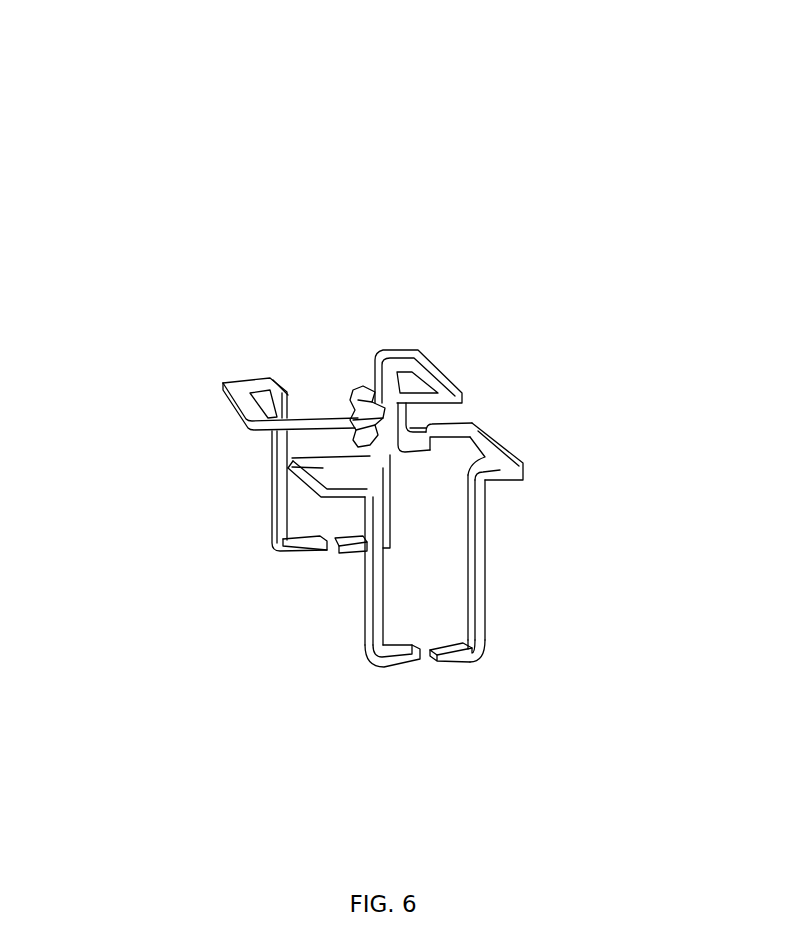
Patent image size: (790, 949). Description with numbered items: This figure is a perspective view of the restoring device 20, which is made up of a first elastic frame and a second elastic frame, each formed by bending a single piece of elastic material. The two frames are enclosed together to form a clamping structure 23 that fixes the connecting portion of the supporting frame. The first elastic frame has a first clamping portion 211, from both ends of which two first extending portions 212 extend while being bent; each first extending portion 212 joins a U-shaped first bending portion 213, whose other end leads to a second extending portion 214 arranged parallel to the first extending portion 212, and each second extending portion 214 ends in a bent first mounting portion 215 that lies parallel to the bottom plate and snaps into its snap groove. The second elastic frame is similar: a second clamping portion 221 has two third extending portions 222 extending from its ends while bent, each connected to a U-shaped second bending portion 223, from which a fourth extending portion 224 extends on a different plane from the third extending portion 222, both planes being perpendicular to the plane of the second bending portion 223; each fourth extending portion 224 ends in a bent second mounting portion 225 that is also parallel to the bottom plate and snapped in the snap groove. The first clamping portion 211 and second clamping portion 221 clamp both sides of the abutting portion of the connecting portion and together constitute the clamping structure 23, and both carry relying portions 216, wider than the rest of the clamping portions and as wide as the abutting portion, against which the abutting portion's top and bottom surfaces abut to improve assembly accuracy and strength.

The restoring device 20 is at (300, 53).
The clamping structure 23 is at (150, 322).
The first clamping portion 211 is at (360, 390).
The first extending portion 212 is at (382, 453).
The first bending portion 213 is at (312, 503).
The second extending portion 214 is at (370, 588).
The first mounting portion 215 is at (400, 652).
The relying portion 216 is at (366, 395).
The second clamping portion 221 is at (357, 433).
The third extending portion 222 is at (430, 443).
The second bending portion 223 is at (503, 462).
The fourth extending portion 224 is at (482, 578).
The second mounting portion 225 is at (457, 650).